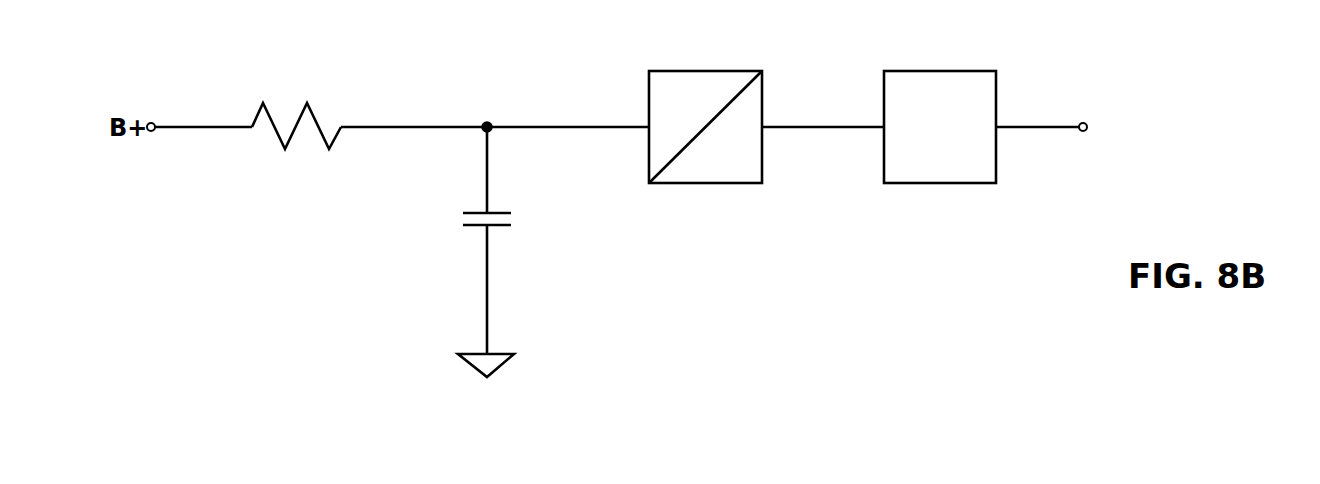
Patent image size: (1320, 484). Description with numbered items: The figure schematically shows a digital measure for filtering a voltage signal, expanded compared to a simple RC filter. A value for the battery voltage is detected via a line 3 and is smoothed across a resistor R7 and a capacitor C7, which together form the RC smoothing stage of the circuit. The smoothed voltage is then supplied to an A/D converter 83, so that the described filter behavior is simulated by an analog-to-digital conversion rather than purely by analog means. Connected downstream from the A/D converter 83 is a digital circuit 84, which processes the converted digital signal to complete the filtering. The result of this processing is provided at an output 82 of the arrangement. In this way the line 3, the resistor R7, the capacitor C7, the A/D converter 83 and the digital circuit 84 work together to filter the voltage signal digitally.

The line 3 is at (182, 128).
The resistor R7 is at (296, 108).
The capacitor C7 is at (497, 240).
The A/D converter 83 is at (697, 183).
The digital circuit 84 is at (937, 183).
The output terminal 82 is at (1083, 131).